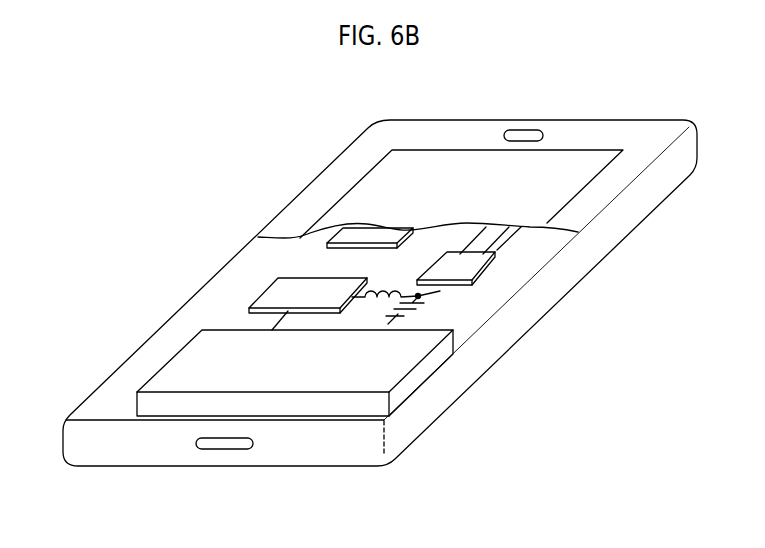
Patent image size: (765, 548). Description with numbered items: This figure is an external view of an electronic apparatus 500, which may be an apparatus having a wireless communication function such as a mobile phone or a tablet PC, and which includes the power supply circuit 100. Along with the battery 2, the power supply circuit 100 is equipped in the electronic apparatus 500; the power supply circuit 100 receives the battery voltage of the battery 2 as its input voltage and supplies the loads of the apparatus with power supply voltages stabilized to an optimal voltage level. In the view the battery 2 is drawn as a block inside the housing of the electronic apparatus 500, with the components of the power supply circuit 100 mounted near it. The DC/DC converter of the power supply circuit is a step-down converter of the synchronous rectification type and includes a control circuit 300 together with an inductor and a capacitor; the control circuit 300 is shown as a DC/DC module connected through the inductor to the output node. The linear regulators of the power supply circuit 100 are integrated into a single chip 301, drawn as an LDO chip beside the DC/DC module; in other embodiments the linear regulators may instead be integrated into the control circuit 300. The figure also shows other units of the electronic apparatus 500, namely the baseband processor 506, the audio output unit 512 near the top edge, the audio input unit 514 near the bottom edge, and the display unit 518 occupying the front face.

The electronic apparatus 500 is at (399, 533).
The power supply circuit 100 is at (548, 322).
The display unit 518 is at (568, 172).
The audio output unit 512 is at (523, 129).
The audio input unit 514 is at (218, 450).
The battery 2 is at (185, 362).
The control circuit 300 is at (278, 278).
The single chip 301 is at (450, 252).
The baseband processor 506 is at (360, 233).